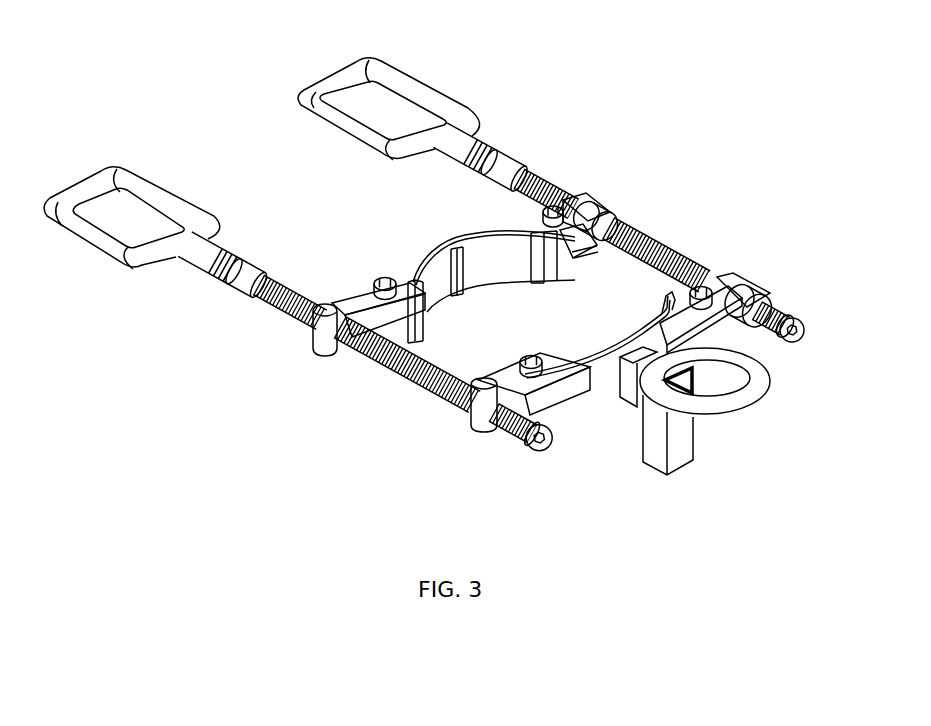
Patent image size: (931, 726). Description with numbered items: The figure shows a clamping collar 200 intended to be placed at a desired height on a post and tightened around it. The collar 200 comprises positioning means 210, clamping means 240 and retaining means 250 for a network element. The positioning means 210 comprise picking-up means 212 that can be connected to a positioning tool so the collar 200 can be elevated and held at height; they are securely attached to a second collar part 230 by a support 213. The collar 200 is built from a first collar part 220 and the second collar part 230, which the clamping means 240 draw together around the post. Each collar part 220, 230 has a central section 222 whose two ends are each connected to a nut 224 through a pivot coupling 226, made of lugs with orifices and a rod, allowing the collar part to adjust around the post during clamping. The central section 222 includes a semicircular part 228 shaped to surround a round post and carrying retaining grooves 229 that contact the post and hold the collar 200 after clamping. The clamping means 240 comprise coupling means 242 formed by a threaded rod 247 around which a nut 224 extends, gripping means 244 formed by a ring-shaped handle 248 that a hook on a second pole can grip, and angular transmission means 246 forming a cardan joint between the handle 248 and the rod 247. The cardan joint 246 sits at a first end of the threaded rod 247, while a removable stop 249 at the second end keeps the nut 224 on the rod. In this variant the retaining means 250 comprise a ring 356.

The clamping collar 200 is at (208, 122).
The positioning means 210 is at (749, 420).
The picking-up means 212 is at (680, 450).
The support 213 is at (644, 358).
The first collar part 220 is at (403, 280).
The central section 222 is at (568, 247).
The nut 224 is at (340, 330).
The pivot coupling 226 is at (381, 278).
The semicircular part 228 is at (492, 256).
The retaining groove 229 is at (461, 296).
The second collar part 230 is at (554, 371).
The clamping means 240 is at (572, 170).
The coupling means 242 is at (703, 269).
The gripping means 244 is at (388, 88).
The angular transmission means 246 is at (490, 152).
The threaded rod 247 is at (670, 242).
The ring-shaped handle 248 is at (332, 82).
The removable stop 249 is at (533, 452).
The retaining means 250 is at (730, 400).
The ring 356 is at (748, 395).